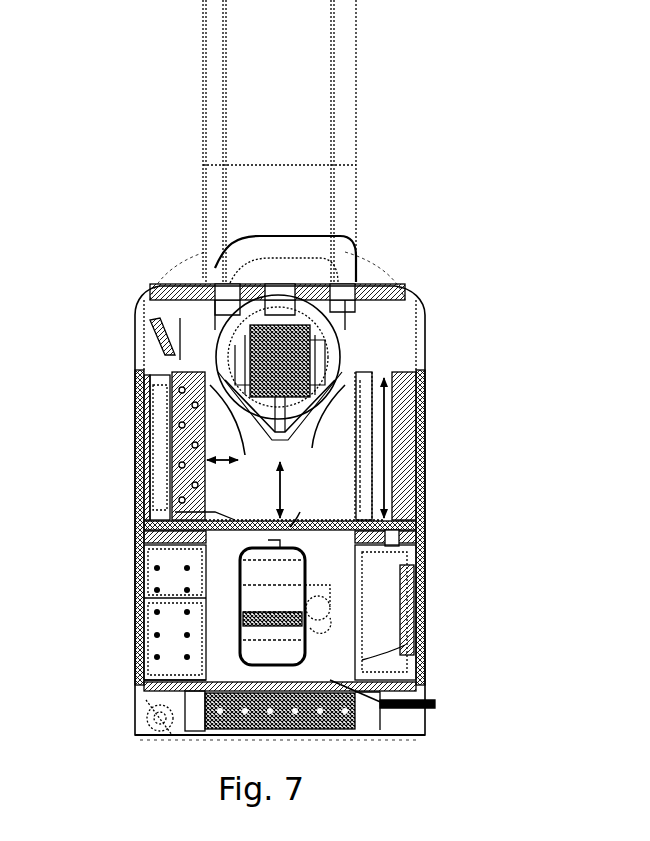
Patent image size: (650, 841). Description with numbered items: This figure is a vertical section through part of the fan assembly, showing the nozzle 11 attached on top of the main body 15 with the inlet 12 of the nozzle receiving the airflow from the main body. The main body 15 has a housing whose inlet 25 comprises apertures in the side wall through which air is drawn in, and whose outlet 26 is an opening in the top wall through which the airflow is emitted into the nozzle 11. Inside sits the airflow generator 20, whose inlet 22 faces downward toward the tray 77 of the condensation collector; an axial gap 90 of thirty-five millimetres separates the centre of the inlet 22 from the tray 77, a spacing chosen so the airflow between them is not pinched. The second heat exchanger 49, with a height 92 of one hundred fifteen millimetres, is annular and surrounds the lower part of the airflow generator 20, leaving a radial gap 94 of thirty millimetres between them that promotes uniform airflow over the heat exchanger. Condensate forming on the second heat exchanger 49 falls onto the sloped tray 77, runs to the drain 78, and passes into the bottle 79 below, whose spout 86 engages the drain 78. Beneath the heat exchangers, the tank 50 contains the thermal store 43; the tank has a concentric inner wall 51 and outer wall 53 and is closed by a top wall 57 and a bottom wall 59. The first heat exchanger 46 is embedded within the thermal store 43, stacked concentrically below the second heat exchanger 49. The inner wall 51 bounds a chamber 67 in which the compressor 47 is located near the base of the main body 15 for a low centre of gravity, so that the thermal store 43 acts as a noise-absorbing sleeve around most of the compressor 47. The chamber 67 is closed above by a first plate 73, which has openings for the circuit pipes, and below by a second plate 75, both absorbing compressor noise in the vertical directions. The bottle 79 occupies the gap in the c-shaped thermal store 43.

The nozzle 11 is at (193, 128).
The inlet 12 is at (245, 283).
The main body 15 is at (118, 330).
The airflow generator 20 is at (320, 447).
The inlet of the airflow generator 22 is at (245, 457).
The inlet 25 is at (145, 405).
The outlet 26 is at (300, 291).
The thermal store 43 is at (165, 690).
The first heat exchanger 46 is at (160, 658).
The compressor 47 is at (330, 645).
The second heat exchanger 49 is at (150, 395).
The tank 50 is at (160, 575).
The inner wall 51 is at (200, 600).
The outer wall 53 is at (160, 630).
The top wall 57 is at (155, 536).
The bottom wall 59 is at (150, 692).
The chamber 67 is at (330, 600).
The first plate 73 is at (300, 512).
The second plate 75 is at (380, 706).
The tray 77 is at (215, 512).
The drain 78 is at (395, 522).
The bottle 79 is at (420, 570).
The spout 86 is at (400, 540).
The axial gap 90 is at (278, 494).
The height 92 is at (388, 378).
The radial gap 94 is at (205, 460).